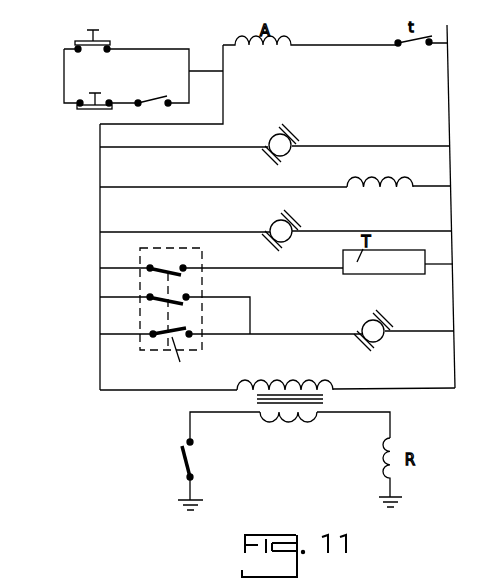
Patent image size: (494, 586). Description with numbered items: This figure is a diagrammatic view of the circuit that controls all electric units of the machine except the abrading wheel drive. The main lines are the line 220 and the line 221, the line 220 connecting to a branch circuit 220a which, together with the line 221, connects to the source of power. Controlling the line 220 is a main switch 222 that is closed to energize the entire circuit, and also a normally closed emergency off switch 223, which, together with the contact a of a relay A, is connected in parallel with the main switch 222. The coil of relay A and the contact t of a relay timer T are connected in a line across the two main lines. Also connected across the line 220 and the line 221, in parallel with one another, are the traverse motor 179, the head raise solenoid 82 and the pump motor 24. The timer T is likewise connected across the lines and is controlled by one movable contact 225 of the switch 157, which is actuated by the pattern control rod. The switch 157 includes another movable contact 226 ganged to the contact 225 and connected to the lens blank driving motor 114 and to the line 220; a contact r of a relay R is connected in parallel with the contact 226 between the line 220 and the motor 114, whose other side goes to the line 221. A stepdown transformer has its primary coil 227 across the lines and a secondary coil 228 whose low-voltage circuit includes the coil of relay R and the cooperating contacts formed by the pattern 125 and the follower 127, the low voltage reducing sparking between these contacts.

The main line 220 is at (100, 183).
The branch circuit 220a is at (106, 78).
The main line 221 is at (450, 86).
The main switch 222 is at (111, 38).
The emergency off switch 223 is at (80, 108).
The traverse motor 179 is at (272, 134).
The head raise solenoid 82 is at (347, 178).
The pump motor 24 is at (267, 223).
The switch 157 is at (205, 309).
The movable contact 225 is at (162, 267).
The movable contact 226 is at (158, 300).
The lens blank driving motor 114 is at (362, 325).
The primary coil 227 is at (264, 381).
The secondary coil 228 is at (287, 420).
The pattern 125 is at (180, 457).
The follower 127 is at (196, 443).